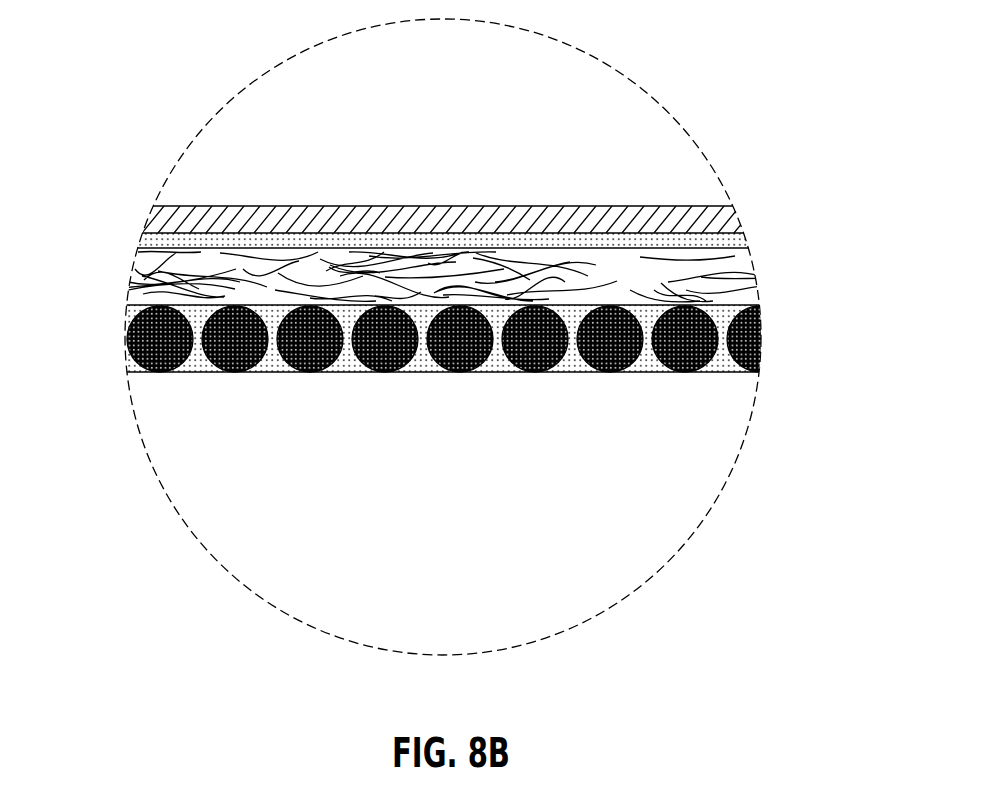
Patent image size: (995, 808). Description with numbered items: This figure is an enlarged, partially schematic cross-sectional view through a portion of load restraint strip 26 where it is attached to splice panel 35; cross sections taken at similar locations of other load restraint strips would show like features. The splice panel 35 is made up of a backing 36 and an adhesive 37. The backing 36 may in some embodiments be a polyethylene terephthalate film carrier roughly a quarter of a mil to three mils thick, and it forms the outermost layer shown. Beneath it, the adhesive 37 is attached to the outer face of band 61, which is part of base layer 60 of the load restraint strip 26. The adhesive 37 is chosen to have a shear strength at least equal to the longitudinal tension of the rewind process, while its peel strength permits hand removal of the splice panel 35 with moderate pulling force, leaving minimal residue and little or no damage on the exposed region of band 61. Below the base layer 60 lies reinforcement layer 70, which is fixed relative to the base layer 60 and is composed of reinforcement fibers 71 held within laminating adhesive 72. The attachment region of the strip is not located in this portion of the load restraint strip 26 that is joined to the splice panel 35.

The load restraint strip 26 is at (436, 326).
The splice panel 35 is at (458, 215).
The backing 36 is at (551, 206).
The adhesive 37 is at (737, 237).
The base layer 60 is at (455, 277).
The band 61 is at (740, 253).
The reinforcement layer 70 is at (461, 343).
The reinforcement fibers 71 is at (687, 374).
The laminating adhesive 72 is at (733, 313).